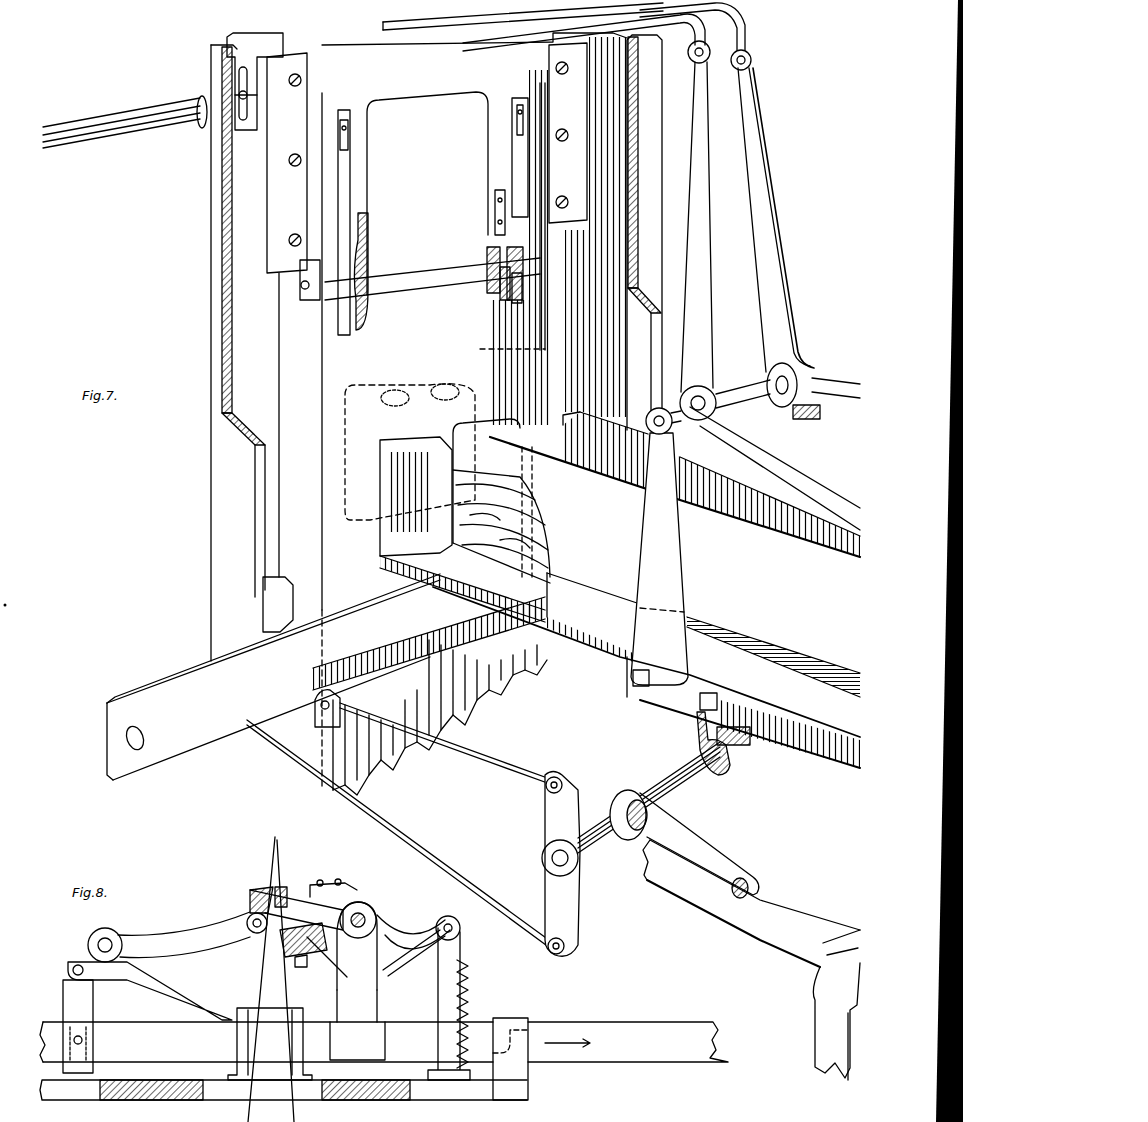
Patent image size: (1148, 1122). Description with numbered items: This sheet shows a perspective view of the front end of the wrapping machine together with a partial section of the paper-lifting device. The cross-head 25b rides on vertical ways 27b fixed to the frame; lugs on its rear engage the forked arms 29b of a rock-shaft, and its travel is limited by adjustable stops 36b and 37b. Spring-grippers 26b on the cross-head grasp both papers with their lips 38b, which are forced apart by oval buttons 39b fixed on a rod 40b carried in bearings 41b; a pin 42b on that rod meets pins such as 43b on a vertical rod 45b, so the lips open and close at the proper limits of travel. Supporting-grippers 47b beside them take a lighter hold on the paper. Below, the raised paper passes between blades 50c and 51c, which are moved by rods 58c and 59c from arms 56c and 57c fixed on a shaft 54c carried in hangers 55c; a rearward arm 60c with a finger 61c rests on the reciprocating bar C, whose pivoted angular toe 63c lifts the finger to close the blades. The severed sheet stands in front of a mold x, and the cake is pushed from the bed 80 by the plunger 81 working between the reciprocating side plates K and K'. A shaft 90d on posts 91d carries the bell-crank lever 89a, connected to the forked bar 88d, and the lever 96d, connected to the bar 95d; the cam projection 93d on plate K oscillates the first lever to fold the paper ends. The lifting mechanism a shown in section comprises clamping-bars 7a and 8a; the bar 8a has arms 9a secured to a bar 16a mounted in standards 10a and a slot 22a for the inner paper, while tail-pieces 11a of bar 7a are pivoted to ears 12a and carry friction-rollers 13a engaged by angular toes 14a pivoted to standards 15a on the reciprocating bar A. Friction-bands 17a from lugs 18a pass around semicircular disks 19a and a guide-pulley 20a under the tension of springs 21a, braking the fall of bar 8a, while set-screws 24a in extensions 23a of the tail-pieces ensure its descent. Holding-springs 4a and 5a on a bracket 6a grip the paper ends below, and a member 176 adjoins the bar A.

In FIG. 7, the vertical ways 27b is at (436, 411).
In FIG. 7, the arms of the rock-shaft 29b is at (148, 125).
In FIG. 7, the adjustable stop 36b is at (257, 48).
In FIG. 7, the cross-head 25b is at (427, 183).
In FIG. 7, the rod 40b is at (425, 274).
In FIG. 7, the lips of the lifting-grippers 38b is at (430, 229).
In FIG. 7, the supporting-grippers 47b is at (438, 271).
In FIG. 7, the spring-grippers 26b is at (420, 176).
In FIG. 7, the bearings 41b is at (442, 271).
In FIG. 7, the pin 43b is at (520, 217).
In FIG. 7, the pin 42b is at (579, 259).
In FIG. 7, the oval-shaped buttons 39b is at (441, 297).
In FIG. 7, the vertical rod 45b is at (537, 305).
In FIG. 7, the adjustable stop 37b is at (278, 604).
In FIG. 7, the bar 95d is at (523, 15).
In FIG. 7, the bar 88d is at (664, 8).
In FIG. 7, the bell-crank lever 96d is at (690, 312).
In FIG. 7, the strut 89a is at (768, 252).
In FIG. 7, the shaft 90d is at (740, 385).
In FIG. 7, the cam projection 93d is at (775, 454).
In FIG. 7, the reciprocating side plate K is at (711, 484).
In FIG. 7, the reciprocating side plate K' is at (675, 567).
In FIG. 7, the posts 91d is at (659, 546).
In FIG. 7, the bed 80 is at (465, 520).
In FIG. 7, the plunger 81 is at (501, 523).
In FIG. 7, the box or mold x is at (410, 444).
In FIG. 7, the hangers 55c is at (700, 740).
In FIG. 7, the cutter or blade 50c is at (326, 677).
In FIG. 7, the blade 51c is at (290, 742).
In FIG. 7, the rods 58c is at (495, 755).
In FIG. 7, the rods 59c is at (458, 872).
In FIG. 7, the arms 56c is at (548, 815).
In FIG. 7, the arms 57c is at (550, 898).
In FIG. 7, the shaft 54c is at (656, 780).
In FIG. 7, the rearwardly-projecting arm 60c is at (700, 850).
In FIG. 7, the finger 61c is at (730, 895).
In FIG. 7, the angular toe 63c is at (840, 932).
In FIG. 7, the reciprocating bar C is at (752, 932).
In FIG. 8, the reciprocating bar A is at (283, 1061).
In FIG. 8, the rail 176 is at (532, 1020).
In FIG. 8, the standards 15a is at (68, 998).
In FIG. 8, the angular toes 14a is at (165, 1000).
In FIG. 8, the friction-rollers 13a is at (90, 945).
In FIG. 8, the tail-pieces 11a is at (184, 935).
In FIG. 8, the ears 12a is at (248, 920).
In FIG. 8, the clamping-bar 7a is at (255, 890).
In FIG. 8, the clamping-bar 8a is at (289, 888).
In FIG. 8, the slot 22a is at (296, 910).
In FIG. 8, the arms 9a is at (333, 880).
In FIG. 8, the lugs 18a is at (358, 888).
In FIG. 8, the standards 10a is at (357, 981).
In FIG. 8, the set-screws 24a is at (303, 954).
In FIG. 8, the extensions 23a is at (321, 966).
In FIG. 8, the bar 16a is at (378, 912).
In FIG. 8, the guide-pulley 20a is at (462, 928).
In FIG. 8, the friction-bands 17a is at (426, 1004).
In FIG. 8, the semicircular disks 19a is at (385, 960).
In FIG. 8, the springs 21a is at (470, 998).
In FIG. 8, the holding-spring 5a is at (252, 996).
In FIG. 8, the holding-spring 4a is at (285, 996).
In FIG. 8, the bracket 6a is at (245, 1047).
In FIG. 8, the mechanism for raising the outer paper a is at (234, 957).